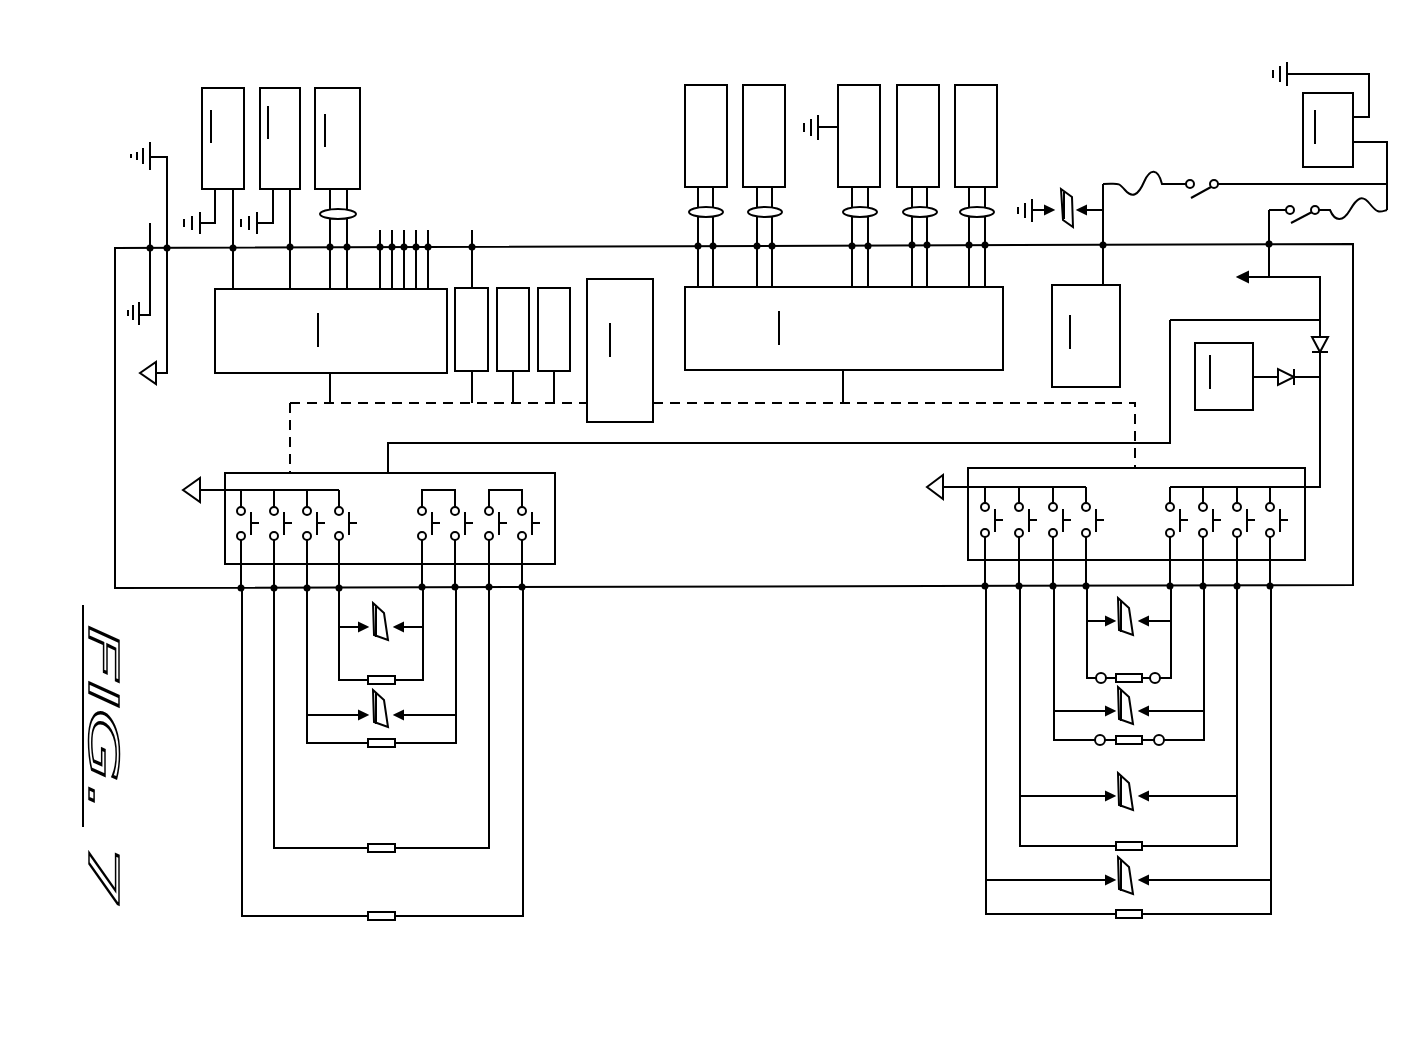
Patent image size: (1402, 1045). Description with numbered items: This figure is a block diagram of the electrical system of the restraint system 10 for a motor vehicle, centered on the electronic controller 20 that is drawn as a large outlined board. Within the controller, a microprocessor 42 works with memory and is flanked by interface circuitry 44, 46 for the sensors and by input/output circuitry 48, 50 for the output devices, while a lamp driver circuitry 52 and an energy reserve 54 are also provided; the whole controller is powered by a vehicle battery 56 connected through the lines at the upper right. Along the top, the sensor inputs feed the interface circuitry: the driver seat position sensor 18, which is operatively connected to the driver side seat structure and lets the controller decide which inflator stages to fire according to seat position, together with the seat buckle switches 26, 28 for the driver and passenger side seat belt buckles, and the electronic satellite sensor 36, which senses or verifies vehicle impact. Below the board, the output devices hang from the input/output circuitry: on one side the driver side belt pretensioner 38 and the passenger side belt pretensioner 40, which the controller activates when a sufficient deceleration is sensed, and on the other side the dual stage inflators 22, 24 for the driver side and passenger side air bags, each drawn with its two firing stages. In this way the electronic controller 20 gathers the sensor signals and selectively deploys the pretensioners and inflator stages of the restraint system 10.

The restraint system 10 is at (1333, 748).
The driver seat position sensor 18 is at (337, 188).
The electronic controller 20 is at (1317, 586).
The inflator 22 is at (1120, 697).
The inflator 24 is at (1120, 867).
The seat buckle switch 26 is at (214, 188).
The seat buckle switch 28 is at (270, 188).
The electronic satellite sensor 36 is at (855, 167).
The driver side belt pretensioner 38 is at (372, 844).
The passenger side belt pretensioner 40 is at (383, 912).
The microprocessor 42 is at (620, 350).
The interface circuitry 44 is at (331, 346).
The interface circuitry 46 is at (844, 345).
The input/output circuitry 48 is at (552, 523).
The input/output circuitry 50 is at (968, 525).
The lamp driver circuitry 52 is at (1086, 285).
The energy reserve 54 is at (1257, 376).
The vehicle battery 56 is at (1330, 136).